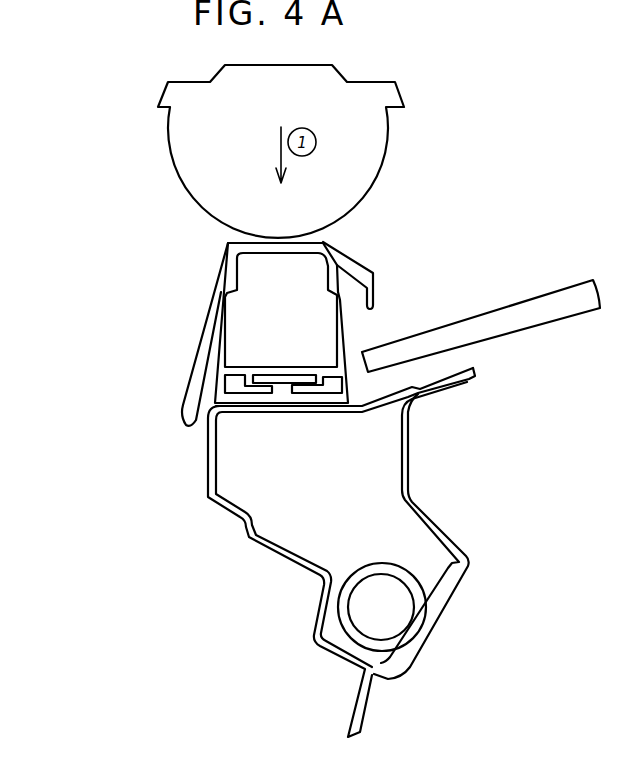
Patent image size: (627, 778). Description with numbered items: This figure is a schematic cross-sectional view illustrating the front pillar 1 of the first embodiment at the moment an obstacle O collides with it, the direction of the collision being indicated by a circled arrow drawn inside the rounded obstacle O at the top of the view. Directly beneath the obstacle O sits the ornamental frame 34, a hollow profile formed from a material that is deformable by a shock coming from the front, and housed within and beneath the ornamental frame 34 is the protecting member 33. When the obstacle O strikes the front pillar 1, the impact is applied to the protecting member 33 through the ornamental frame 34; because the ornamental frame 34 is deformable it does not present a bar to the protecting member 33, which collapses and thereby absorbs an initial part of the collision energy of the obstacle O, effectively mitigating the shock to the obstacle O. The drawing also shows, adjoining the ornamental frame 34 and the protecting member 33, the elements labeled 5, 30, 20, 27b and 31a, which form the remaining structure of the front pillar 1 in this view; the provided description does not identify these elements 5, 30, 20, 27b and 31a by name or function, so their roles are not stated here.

The obstacle O is at (388, 132).
The front pillar 1 is at (508, 157).
The ornamental frame 34 is at (332, 248).
The protecting member 33 is at (338, 300).
The window glass 5 is at (523, 302).
The outer panel 30 is at (221, 579).
The inner panel 20 is at (480, 516).
The bead portion 27b is at (404, 496).
The flange portion 31a is at (255, 403).